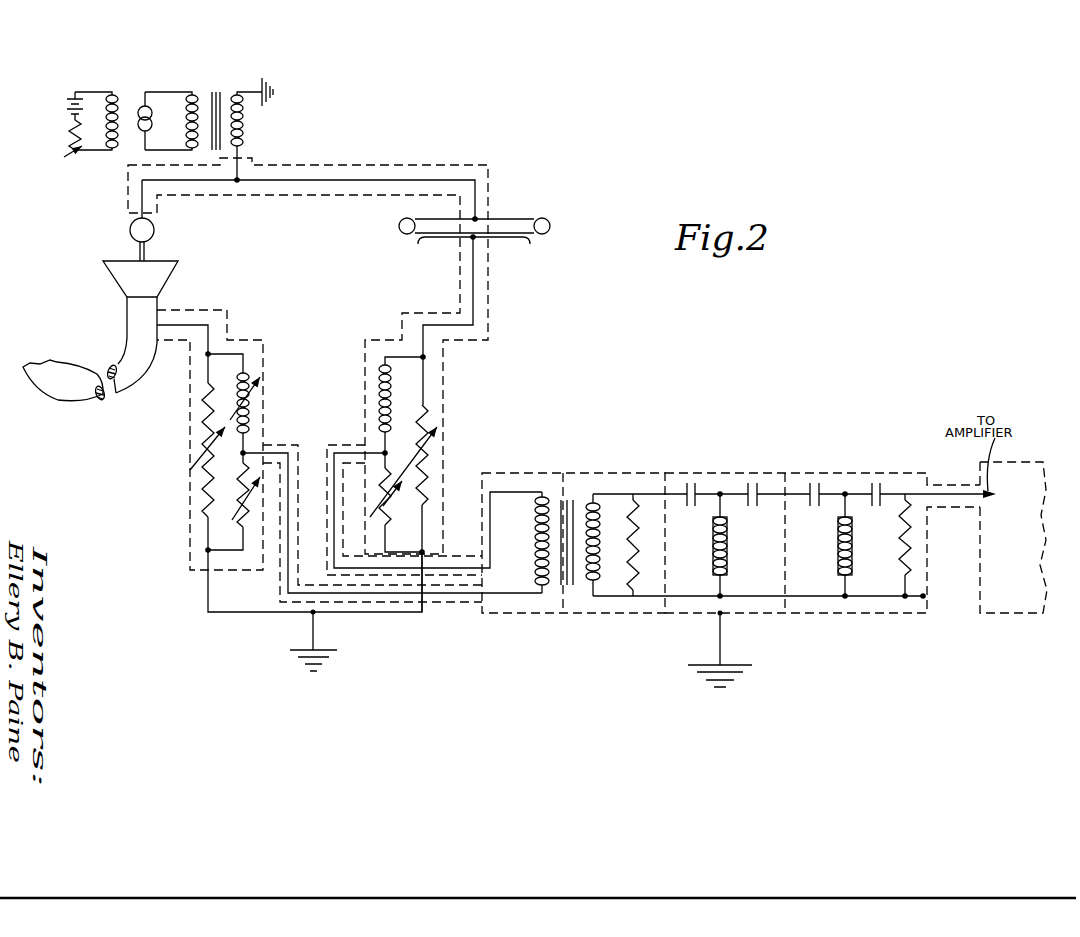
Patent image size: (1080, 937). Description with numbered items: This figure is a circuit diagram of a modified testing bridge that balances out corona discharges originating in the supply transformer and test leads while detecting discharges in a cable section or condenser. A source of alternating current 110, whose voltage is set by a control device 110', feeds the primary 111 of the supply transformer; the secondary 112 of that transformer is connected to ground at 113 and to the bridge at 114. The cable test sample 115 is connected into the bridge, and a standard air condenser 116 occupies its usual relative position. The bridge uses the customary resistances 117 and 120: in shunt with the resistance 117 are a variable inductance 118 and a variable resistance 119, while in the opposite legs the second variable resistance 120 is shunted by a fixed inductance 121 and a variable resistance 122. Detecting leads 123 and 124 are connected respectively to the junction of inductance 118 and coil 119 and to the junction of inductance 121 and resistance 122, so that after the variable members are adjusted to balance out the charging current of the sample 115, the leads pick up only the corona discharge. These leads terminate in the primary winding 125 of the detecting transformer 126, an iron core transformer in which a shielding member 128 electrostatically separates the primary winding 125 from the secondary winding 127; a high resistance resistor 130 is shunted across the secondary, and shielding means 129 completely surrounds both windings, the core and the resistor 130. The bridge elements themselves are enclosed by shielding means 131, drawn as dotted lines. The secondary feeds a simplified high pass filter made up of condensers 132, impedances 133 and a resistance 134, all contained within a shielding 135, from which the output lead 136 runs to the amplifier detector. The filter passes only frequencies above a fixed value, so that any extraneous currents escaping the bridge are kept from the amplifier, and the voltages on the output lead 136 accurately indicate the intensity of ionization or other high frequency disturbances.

The control device 110' is at (96, 109).
The source of alternating current 110 is at (167, 118).
The primary of the supply transformer 111 is at (195, 99).
The secondary of the supply transformer 112 is at (246, 127).
The ground connection 113 is at (264, 78).
The bridge connection 114 is at (239, 179).
The cable test sample 115 is at (100, 309).
The standard air condenser 116 is at (498, 217).
The resistance 117 is at (200, 438).
The variable inductance 118 is at (262, 377).
The variable resistance 119 is at (232, 521).
The second variable resistance 120 is at (430, 414).
The fixed inductance 121 is at (378, 385).
The variable resistance 122 is at (390, 506).
The detecting lead 123 is at (300, 436).
The detecting lead 124 is at (346, 436).
The primary winding of the detecting transformer 125 is at (542, 496).
The detecting transformer 126 is at (568, 500).
The secondary winding of the detecting transformer 127 is at (598, 504).
The shielding member 128 is at (562, 598).
The shielding means 129 is at (511, 613).
The high resistance resistor 130 is at (632, 591).
The shielding means 131 is at (490, 342).
The condensers 132 is at (752, 482).
The impedances 133 is at (838, 553).
The resistance 134 is at (904, 576).
The shielding 135 is at (786, 613).
The output lead 136 is at (951, 493).